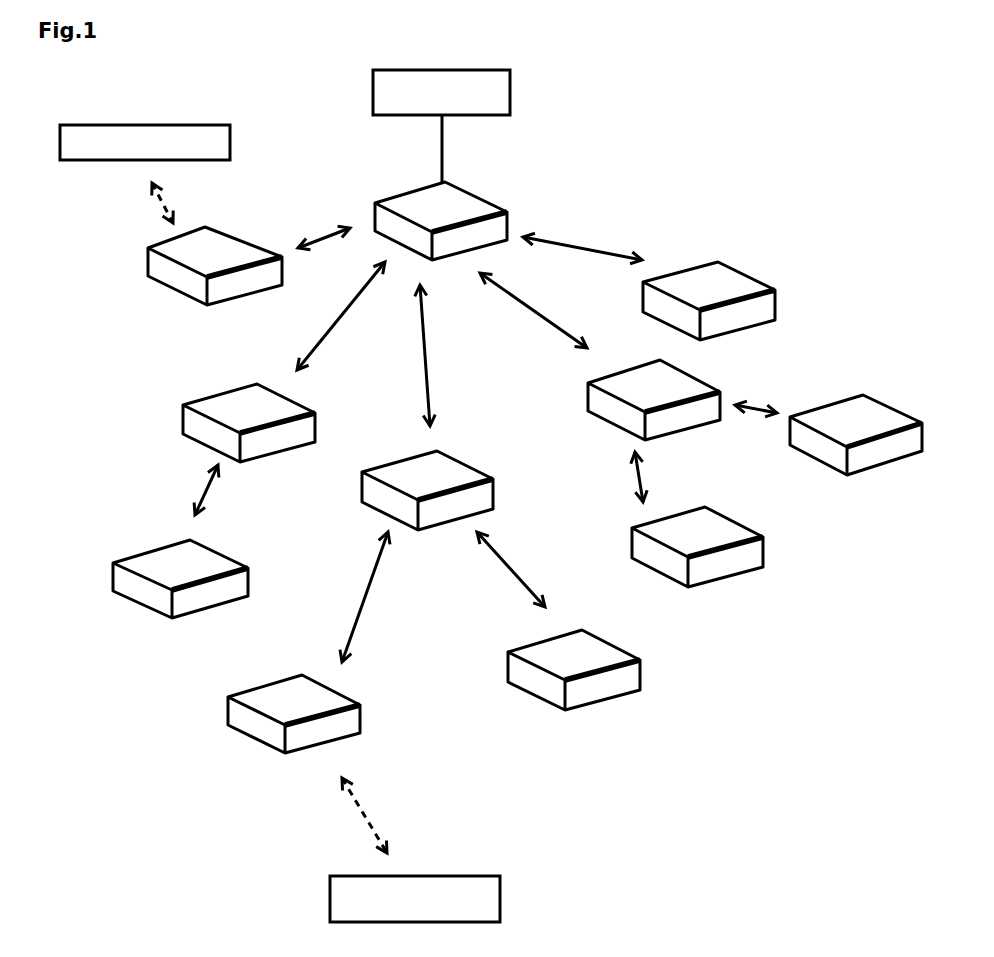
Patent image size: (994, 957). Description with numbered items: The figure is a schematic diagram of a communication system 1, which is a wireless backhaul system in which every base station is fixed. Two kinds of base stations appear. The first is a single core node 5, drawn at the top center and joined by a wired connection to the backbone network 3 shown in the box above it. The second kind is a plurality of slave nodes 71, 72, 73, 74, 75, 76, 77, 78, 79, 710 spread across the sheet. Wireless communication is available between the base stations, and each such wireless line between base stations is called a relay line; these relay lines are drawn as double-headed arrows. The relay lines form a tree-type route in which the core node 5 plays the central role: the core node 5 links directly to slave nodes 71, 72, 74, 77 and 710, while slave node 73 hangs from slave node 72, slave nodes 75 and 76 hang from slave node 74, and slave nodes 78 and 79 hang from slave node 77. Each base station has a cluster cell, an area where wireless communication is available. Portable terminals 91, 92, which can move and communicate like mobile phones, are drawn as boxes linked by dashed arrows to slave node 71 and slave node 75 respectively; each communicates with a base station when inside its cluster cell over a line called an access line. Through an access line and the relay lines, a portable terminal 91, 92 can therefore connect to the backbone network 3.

The communication system 1 is at (757, 153).
The backbone network 3 is at (511, 91).
The core node 5 is at (462, 191).
The slave node 71 is at (240, 232).
The slave node 72 is at (307, 403).
The slave node 73 is at (200, 543).
The slave node 74 is at (480, 468).
The slave node 75 is at (349, 697).
The slave node 76 is at (602, 635).
The slave node 77 is at (677, 368).
The slave node 78 is at (725, 512).
The slave node 79 is at (833, 402).
The slave node 710 is at (733, 263).
The portable terminal 91 is at (172, 125).
The portable terminal 92 is at (443, 876).